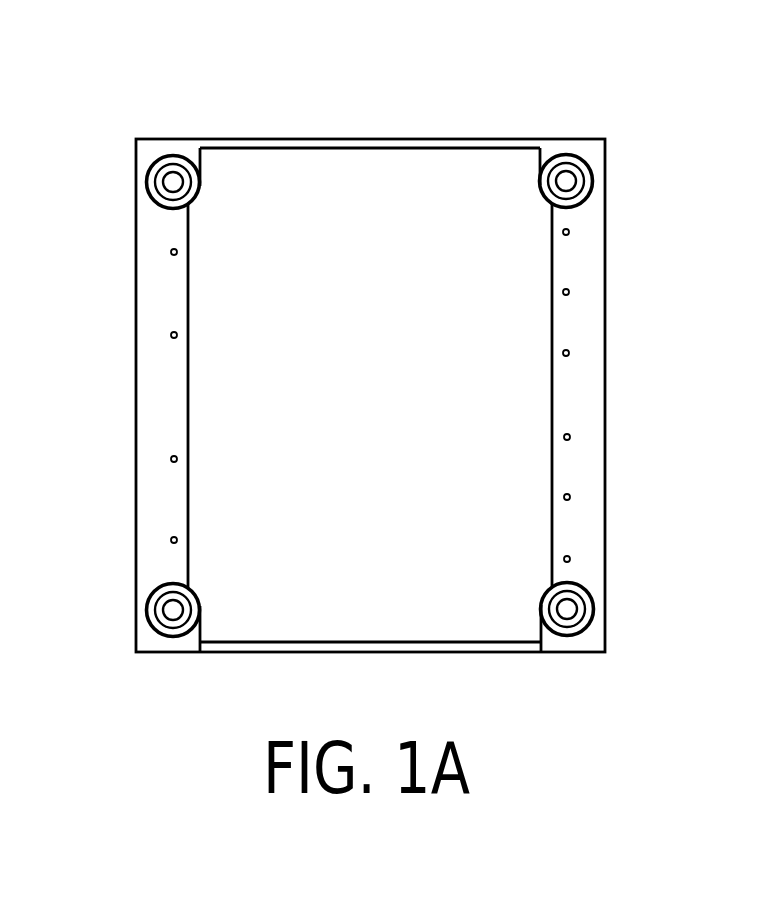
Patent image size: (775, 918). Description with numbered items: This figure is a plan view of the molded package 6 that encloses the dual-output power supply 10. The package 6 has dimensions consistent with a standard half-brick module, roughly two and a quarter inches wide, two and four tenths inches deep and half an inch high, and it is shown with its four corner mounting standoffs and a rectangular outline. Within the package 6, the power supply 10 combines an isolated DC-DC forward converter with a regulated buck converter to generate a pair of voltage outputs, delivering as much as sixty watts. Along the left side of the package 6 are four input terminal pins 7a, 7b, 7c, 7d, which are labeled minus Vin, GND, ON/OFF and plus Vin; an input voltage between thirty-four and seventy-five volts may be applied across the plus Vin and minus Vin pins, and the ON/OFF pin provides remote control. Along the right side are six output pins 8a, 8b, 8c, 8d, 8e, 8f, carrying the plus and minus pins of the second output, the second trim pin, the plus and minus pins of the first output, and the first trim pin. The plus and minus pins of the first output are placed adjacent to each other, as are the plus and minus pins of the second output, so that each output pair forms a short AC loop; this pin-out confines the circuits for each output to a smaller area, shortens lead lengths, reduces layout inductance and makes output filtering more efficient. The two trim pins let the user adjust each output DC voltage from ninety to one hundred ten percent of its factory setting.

The dual-output power supply 10 is at (650, 90).
The molded package 6 is at (474, 168).
The input terminal pin 7a is at (171, 252).
The input terminal pin 7b is at (171, 335).
The input terminal pin 7c is at (171, 459).
The input terminal pin 7d is at (171, 540).
The output pin 8a is at (569, 232).
The output pin 8b is at (569, 292).
The output pin 8c is at (569, 353).
The output pin 8d is at (570, 437).
The output pin 8e is at (570, 497).
The output pin 8f is at (570, 559).